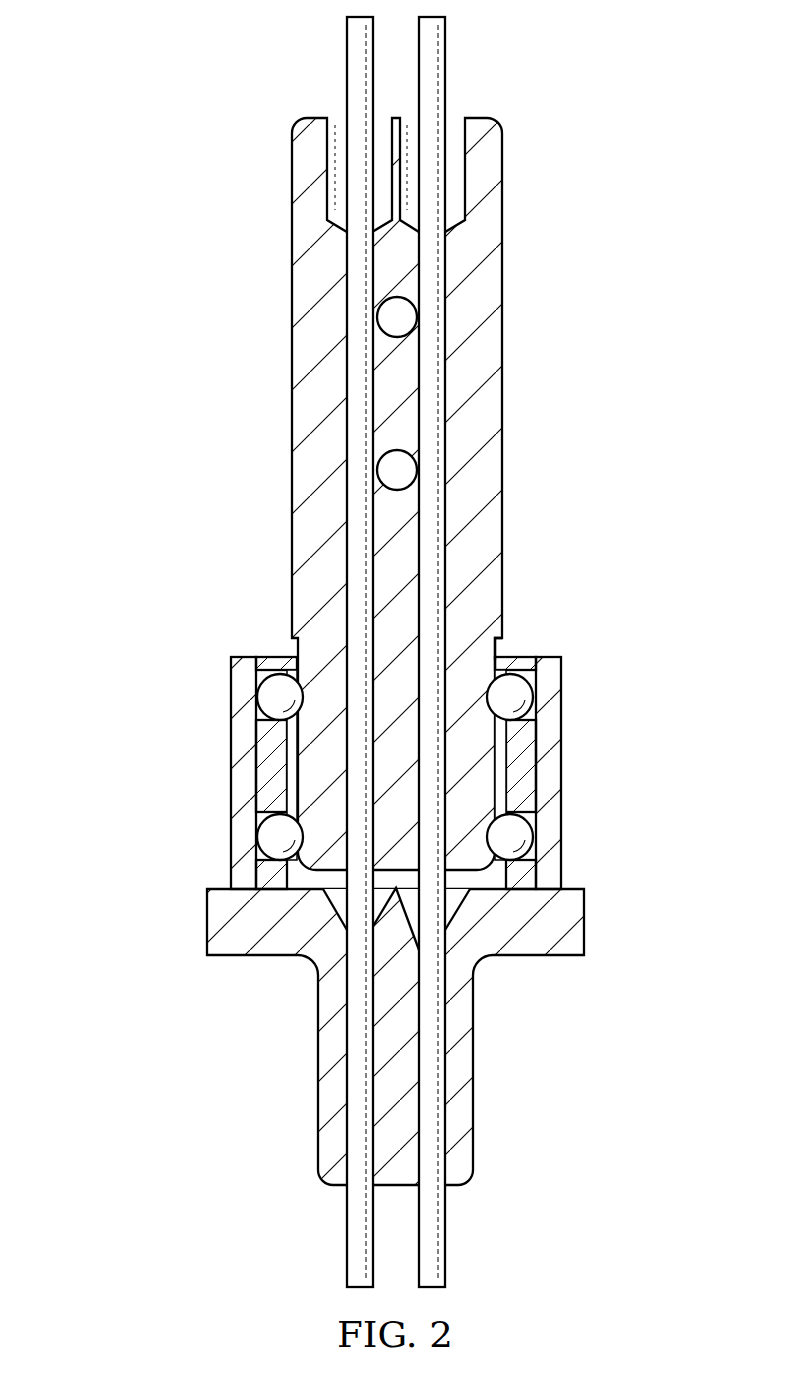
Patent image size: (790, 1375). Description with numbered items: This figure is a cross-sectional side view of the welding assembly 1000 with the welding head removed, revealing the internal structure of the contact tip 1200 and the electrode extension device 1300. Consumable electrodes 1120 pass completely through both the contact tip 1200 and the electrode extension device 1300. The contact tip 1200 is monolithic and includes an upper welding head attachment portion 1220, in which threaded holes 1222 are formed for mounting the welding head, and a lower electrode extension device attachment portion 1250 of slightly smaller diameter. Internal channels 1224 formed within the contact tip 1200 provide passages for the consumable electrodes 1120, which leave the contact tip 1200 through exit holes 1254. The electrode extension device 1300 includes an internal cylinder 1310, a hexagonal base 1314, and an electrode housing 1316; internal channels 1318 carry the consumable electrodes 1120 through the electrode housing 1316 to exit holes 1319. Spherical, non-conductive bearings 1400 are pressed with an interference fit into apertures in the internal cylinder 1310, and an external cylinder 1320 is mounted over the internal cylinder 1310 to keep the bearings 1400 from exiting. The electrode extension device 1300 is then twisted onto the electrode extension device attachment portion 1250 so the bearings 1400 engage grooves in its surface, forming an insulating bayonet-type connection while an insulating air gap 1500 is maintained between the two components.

The welding assembly 1000 is at (128, 128).
The consumable electrodes 1120 is at (347, 60).
The contact tip 1200 is at (292, 432).
The welding head attachment portion 1220 is at (502, 421).
The threaded holes 1222 is at (417, 313).
The internal channels 1224 is at (330, 206).
The electrode extension device attachment portion 1250 is at (497, 648).
The exit holes 1254 is at (338, 874).
The electrode extension device 1300 is at (384, 904).
The internal cylinder 1310 is at (266, 660).
The hexagonal base 1314 is at (207, 935).
The electrode housing 1316 is at (473, 1130).
The internal channels 1318 is at (355, 1075).
The exit holes 1319 is at (340, 1188).
The external cylinder 1320 is at (243, 862).
The bearing 1400 is at (265, 692).
The insulating air gap 1500 is at (491, 876).